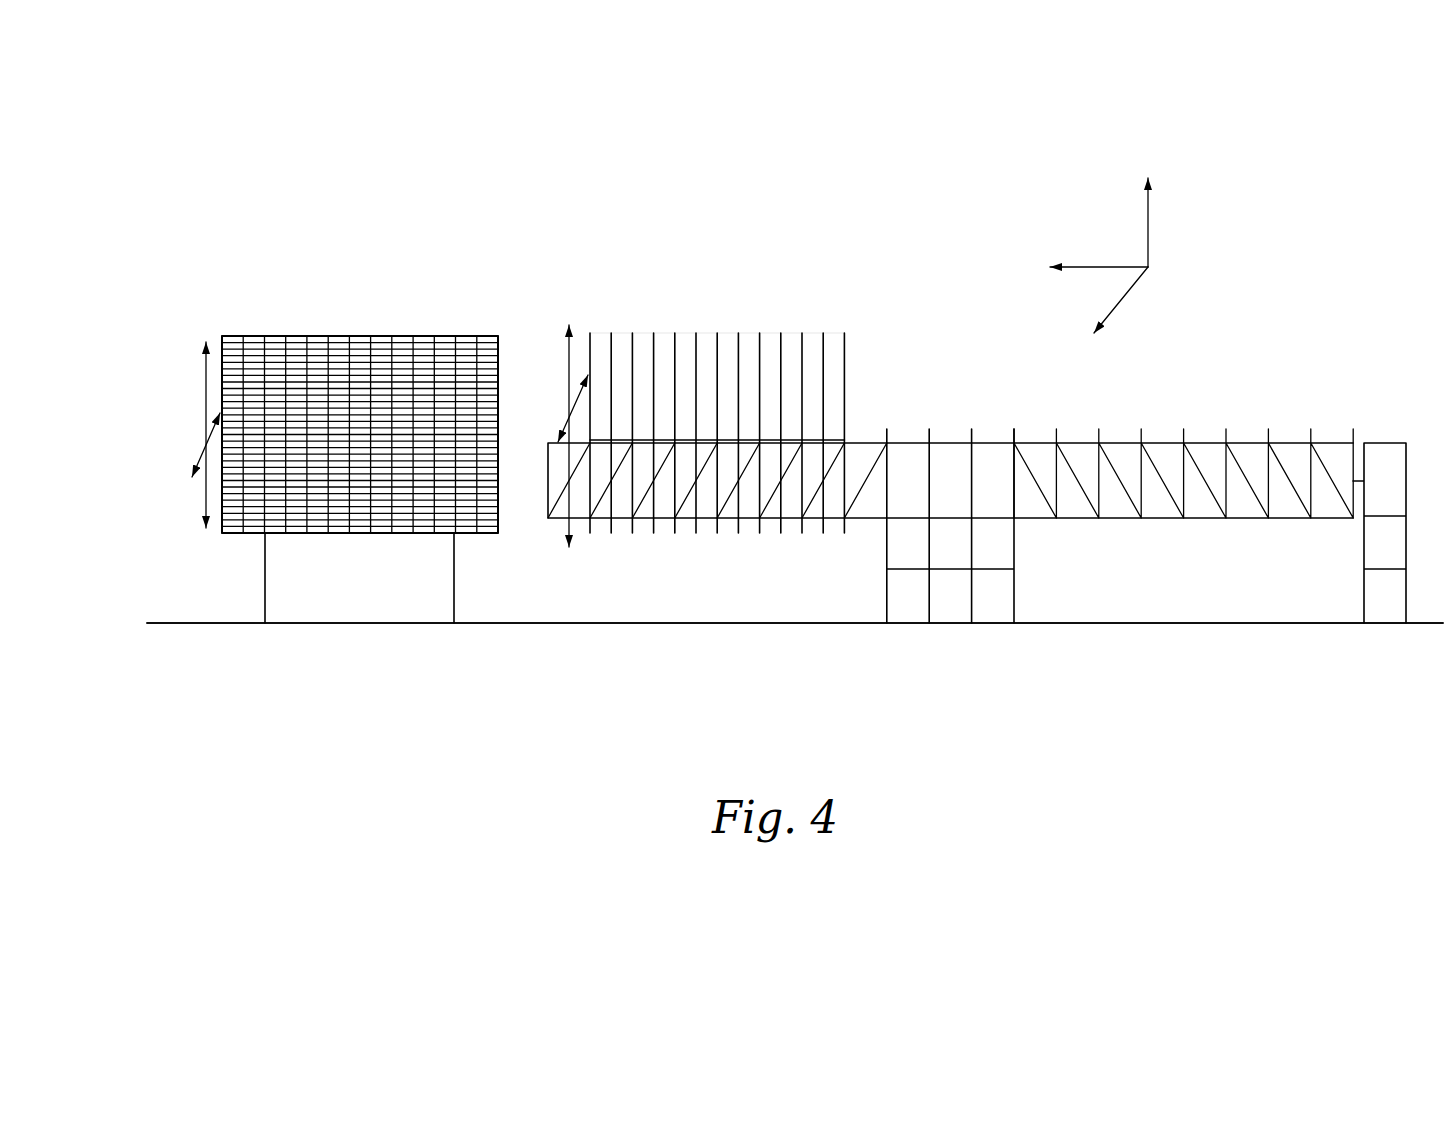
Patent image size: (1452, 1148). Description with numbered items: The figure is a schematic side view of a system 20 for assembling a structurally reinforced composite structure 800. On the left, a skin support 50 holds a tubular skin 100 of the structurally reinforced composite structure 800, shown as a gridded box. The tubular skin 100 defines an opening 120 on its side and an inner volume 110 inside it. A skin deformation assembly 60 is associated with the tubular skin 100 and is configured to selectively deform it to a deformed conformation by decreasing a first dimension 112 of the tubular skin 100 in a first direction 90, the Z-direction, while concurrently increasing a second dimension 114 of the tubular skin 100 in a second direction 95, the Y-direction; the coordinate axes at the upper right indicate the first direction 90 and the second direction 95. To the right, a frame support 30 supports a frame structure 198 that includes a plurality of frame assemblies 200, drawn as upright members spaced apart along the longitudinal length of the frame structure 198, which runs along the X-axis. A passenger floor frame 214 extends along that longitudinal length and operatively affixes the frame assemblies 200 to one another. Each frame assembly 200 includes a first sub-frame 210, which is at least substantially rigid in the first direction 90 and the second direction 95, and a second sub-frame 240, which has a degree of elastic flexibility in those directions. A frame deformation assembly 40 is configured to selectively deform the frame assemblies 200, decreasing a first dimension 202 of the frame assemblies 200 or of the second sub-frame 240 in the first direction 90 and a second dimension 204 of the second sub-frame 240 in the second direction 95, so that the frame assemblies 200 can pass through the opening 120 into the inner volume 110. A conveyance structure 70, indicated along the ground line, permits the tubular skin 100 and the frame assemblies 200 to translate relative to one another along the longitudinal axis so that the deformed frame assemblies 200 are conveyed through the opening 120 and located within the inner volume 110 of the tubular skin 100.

The system 20 is at (218, 216).
The structurally reinforced composite structure 800 is at (445, 247).
The tubular skin 100 is at (338, 322).
The skin deformation assembly 60 is at (393, 332).
The opening 120 is at (498, 368).
The inner volume 110 is at (501, 392).
The first dimension 112 is at (205, 397).
The second dimension 114 is at (197, 460).
The frame deformation assembly 40 is at (857, 397).
The frame support 30 is at (928, 634).
The frame assembly 200 is at (718, 332).
The frame structure 198 is at (749, 290).
The passenger floor frame 214 is at (795, 438).
The first dimension 202 is at (568, 405).
The second dimension 204 is at (545, 432).
The second sub-frame 240 is at (676, 534).
The first sub-frame 210 is at (672, 534).
The skin support 50 is at (362, 640).
The conveyance structure 70 is at (565, 672).
The first direction 90 is at (1148, 230).
The second direction 95 is at (1126, 300).